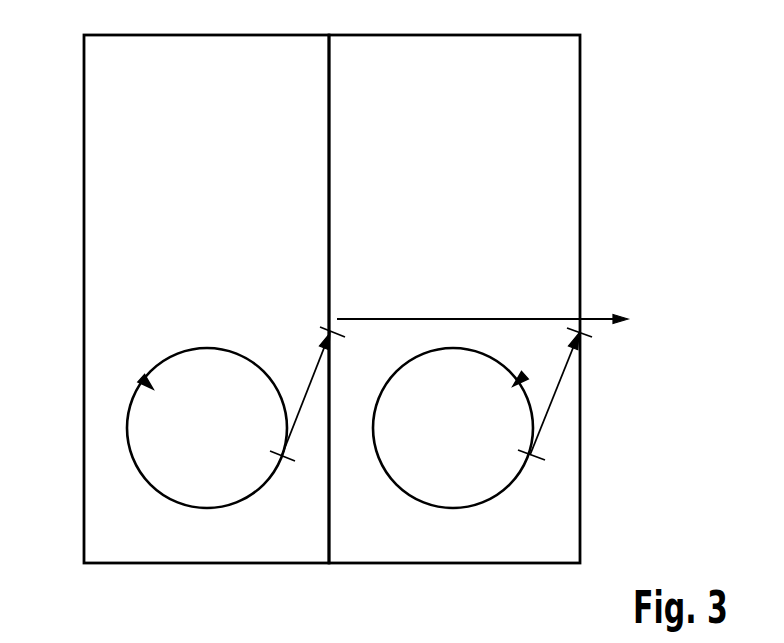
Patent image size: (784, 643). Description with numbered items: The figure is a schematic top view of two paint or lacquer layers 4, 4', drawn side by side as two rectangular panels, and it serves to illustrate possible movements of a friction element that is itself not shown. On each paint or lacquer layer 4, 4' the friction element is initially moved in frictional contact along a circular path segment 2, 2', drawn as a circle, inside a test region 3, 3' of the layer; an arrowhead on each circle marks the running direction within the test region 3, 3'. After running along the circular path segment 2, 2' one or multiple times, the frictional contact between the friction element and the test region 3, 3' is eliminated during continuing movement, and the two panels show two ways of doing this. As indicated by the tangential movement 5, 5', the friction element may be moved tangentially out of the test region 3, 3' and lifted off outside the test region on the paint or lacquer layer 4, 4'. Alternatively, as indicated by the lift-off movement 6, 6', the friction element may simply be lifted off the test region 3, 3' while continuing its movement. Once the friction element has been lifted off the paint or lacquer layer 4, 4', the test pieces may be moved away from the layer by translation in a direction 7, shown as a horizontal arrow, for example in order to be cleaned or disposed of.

The circular path segment 2 is at (159, 428).
The circular path segment 2' is at (506, 448).
The test region 3 is at (92, 367).
The test region 3' is at (576, 382).
The paint or lacquer layer 4 is at (180, 299).
The paint or lacquer layer 4' is at (484, 299).
The tangential movement 5 is at (188, 314).
The tangential movement 5' is at (603, 341).
The lift-off movement 6 is at (180, 397).
The lift-off movement 6' is at (579, 421).
The direction 7 is at (472, 319).